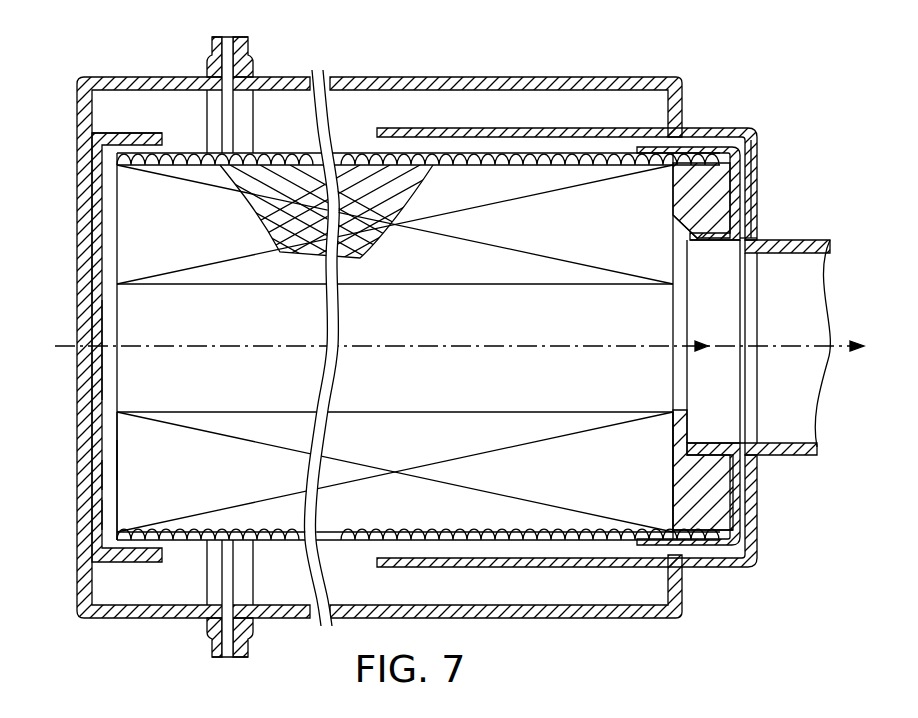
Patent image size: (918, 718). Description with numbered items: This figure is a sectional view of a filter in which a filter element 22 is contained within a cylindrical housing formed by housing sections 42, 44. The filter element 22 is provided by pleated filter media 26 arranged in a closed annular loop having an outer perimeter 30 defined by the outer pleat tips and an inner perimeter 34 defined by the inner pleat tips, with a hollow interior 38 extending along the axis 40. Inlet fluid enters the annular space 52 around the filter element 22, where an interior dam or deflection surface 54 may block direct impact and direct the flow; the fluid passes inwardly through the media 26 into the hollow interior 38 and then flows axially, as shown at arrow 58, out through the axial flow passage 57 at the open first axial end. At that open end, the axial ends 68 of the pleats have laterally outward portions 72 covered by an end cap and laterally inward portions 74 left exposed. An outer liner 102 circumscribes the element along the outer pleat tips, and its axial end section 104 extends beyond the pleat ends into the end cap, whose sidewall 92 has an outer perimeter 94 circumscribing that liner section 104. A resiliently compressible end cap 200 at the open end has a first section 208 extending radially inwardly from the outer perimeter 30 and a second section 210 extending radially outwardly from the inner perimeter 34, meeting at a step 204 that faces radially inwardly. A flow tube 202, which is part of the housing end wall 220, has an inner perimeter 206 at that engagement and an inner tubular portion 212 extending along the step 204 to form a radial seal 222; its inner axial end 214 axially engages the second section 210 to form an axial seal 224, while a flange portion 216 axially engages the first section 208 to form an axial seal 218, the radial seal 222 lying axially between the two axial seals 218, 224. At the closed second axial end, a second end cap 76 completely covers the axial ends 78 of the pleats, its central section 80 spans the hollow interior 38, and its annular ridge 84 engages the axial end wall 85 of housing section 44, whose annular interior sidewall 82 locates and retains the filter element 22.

The filter element 22 is at (346, 153).
The pleated filter media 26 is at (130, 237).
The outer perimeter 30 is at (140, 182).
The inner perimeter 34 is at (135, 282).
The hollow interior 38 is at (125, 384).
The axis 40 is at (273, 347).
The housing section 42 is at (372, 78).
The housing section 44 is at (168, 78).
The annular space 52 is at (513, 98).
The interior dam or deflection surface 54 is at (505, 566).
The axial flow passage 57 is at (676, 366).
The arrow 58 is at (818, 347).
The axial ends of the pleats 68 is at (670, 170).
The laterally outward portions 72 is at (668, 506).
The laterally inward portions 74 is at (666, 418).
The second end cap 76 is at (120, 432).
The axial ends of the pleats 78 is at (118, 458).
The central section 80 is at (107, 352).
The annular interior sidewall 82 is at (124, 142).
The annular ridge 84 is at (96, 475).
The axial end wall 85 is at (101, 510).
The sidewall 92 is at (727, 508).
The outer perimeter 94 is at (707, 540).
The outer liner 102 is at (432, 532).
The axial end section 104 is at (757, 547).
The end cap 200 is at (718, 178).
The flow tube 202 is at (826, 250).
The step 204 is at (690, 235).
The inner perimeter 206 is at (721, 248).
The first section 208 is at (732, 164).
The second section 210 is at (690, 240).
The inner tubular portion 212 is at (717, 447).
The inner axial end 214 is at (688, 445).
The flange portion 216 is at (763, 462).
The first axial seal 218 is at (742, 238).
The end wall 220 is at (755, 204).
The second radial seal 222 is at (731, 270).
The third axial seal 224 is at (708, 246).